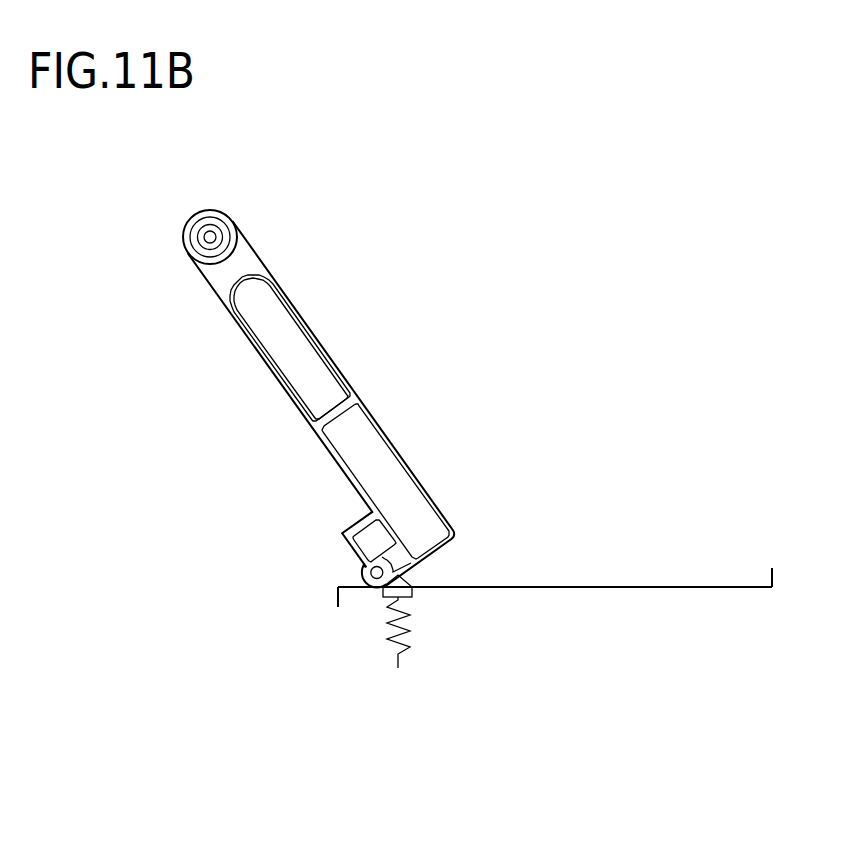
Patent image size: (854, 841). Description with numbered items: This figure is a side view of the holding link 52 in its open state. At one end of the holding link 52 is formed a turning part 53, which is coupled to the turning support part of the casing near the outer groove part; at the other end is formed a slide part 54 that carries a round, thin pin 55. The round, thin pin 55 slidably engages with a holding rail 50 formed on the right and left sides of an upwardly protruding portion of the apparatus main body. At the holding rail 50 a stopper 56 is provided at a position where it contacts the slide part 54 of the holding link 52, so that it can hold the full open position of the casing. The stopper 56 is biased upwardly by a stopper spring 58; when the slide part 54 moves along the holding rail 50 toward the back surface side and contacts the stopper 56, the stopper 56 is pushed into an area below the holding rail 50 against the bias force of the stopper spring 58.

The holding rail 50 is at (670, 586).
The holding link 52 is at (250, 370).
The turning part 53 is at (200, 223).
The slide part 54 is at (347, 550).
The round, thin pin 55 is at (376, 575).
The stopper 56 is at (402, 579).
The stopper spring 58 is at (400, 633).